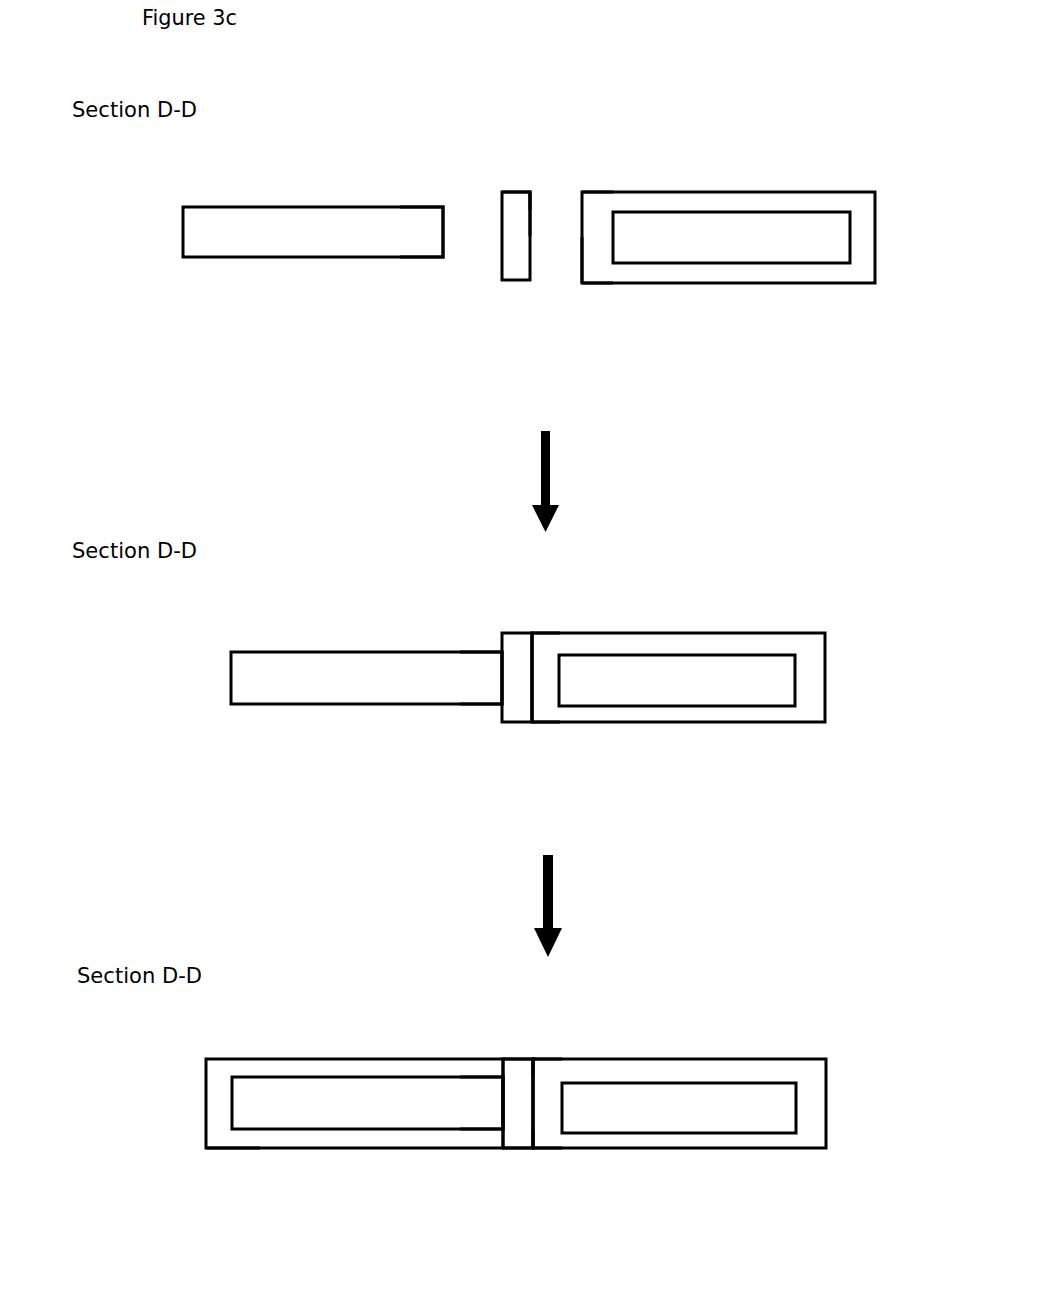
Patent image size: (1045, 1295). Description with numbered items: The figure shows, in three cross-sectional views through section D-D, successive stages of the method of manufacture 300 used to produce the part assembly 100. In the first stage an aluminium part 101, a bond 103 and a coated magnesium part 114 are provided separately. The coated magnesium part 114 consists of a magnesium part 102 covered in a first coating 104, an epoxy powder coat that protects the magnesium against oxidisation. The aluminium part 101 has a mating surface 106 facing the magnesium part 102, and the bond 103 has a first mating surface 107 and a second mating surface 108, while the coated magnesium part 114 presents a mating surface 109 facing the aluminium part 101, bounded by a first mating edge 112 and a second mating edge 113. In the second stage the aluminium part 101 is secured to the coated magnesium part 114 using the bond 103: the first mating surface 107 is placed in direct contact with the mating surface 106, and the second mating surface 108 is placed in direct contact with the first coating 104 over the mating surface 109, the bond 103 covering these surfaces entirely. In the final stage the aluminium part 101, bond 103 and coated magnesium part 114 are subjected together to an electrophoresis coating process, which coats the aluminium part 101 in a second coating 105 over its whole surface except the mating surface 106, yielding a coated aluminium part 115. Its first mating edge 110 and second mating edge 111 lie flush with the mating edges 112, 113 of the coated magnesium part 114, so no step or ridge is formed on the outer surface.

The method of manufacture 300 is at (110, 77).
The part assembly 100 is at (142, 220).
The aluminium part 101 is at (268, 237).
The magnesium part 102 is at (742, 242).
The bond 103 is at (518, 250).
The first coating 104 is at (685, 198).
The second coating 105 is at (295, 1067).
The mating surface of the aluminium part 106 is at (438, 224).
The first mating surface of the bond 107 is at (501, 250).
The second mating surface of the bond 108 is at (531, 216).
The mating surface of the coated magnesium part 109 is at (582, 252).
The first mating edge of the coated aluminium part 110 is at (527, 192).
The second mating edge of the coated aluminium part 111 is at (503, 1147).
The first mating edge of the coated magnesium part 112 is at (582, 257).
The second mating edge of the coated magnesium part 113 is at (583, 284).
The coated magnesium part 114 is at (898, 181).
The coated aluminium part 115 is at (176, 1155).